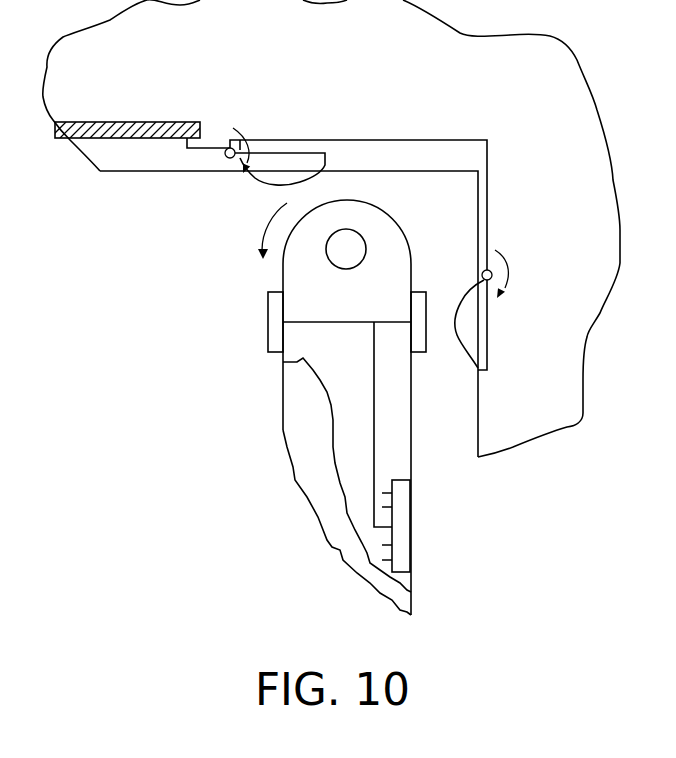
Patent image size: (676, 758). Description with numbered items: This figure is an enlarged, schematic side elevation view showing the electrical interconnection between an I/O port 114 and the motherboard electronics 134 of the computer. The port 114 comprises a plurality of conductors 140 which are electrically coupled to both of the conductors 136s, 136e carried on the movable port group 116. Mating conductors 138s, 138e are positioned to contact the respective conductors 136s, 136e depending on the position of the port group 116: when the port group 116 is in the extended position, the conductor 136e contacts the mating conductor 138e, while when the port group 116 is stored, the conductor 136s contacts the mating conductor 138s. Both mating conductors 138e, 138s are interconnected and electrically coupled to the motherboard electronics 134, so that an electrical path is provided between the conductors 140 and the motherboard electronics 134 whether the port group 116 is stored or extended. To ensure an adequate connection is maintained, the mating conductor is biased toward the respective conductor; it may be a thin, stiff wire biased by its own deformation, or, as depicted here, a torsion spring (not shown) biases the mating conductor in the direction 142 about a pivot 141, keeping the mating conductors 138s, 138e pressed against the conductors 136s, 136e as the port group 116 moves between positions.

The motherboard electronics 134 is at (128, 121).
The direction 142 is at (240, 147).
The pivot 141 is at (228, 156).
The mating conductor 138s is at (263, 183).
The mating conductor 138e is at (480, 323).
The conductor 136s is at (268, 320).
The conductor 136e is at (415, 327).
The port group 116 is at (282, 393).
The conductors 140 is at (392, 553).
The port 114 is at (490, 550).